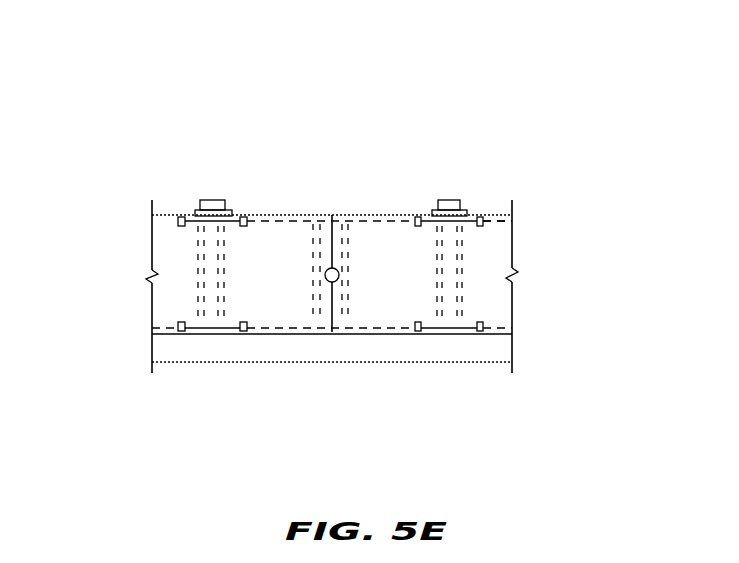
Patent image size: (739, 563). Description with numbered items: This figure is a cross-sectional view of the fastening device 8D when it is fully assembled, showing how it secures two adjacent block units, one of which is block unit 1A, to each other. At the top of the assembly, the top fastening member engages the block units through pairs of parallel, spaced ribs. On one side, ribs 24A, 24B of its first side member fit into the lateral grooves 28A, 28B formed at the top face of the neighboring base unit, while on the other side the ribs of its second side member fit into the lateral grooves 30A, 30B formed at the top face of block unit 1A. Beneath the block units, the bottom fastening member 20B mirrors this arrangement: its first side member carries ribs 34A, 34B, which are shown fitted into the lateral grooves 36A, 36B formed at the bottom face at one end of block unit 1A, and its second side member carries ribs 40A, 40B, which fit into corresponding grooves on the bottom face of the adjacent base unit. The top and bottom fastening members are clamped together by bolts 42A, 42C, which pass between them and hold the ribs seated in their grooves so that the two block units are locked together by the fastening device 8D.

The fastening device 8D is at (520, 62).
The block unit 1A is at (157, 240).
The lateral groove 30A is at (180, 225).
The lateral groove 30B is at (250, 225).
The bottom fastening member 20B is at (363, 326).
The rib 24A is at (418, 217).
The rib 24B is at (480, 217).
The lateral groove 28B is at (483, 229).
The bolt 42C is at (450, 243).
The lateral groove 28A is at (418, 225).
The bolt 42A is at (212, 257).
The lateral groove 36A is at (179, 330).
The rib 34A is at (179, 331).
The rib 34B is at (262, 303).
The lateral groove 36B is at (262, 303).
The rib 40A is at (418, 331).
The rib 40B is at (480, 331).